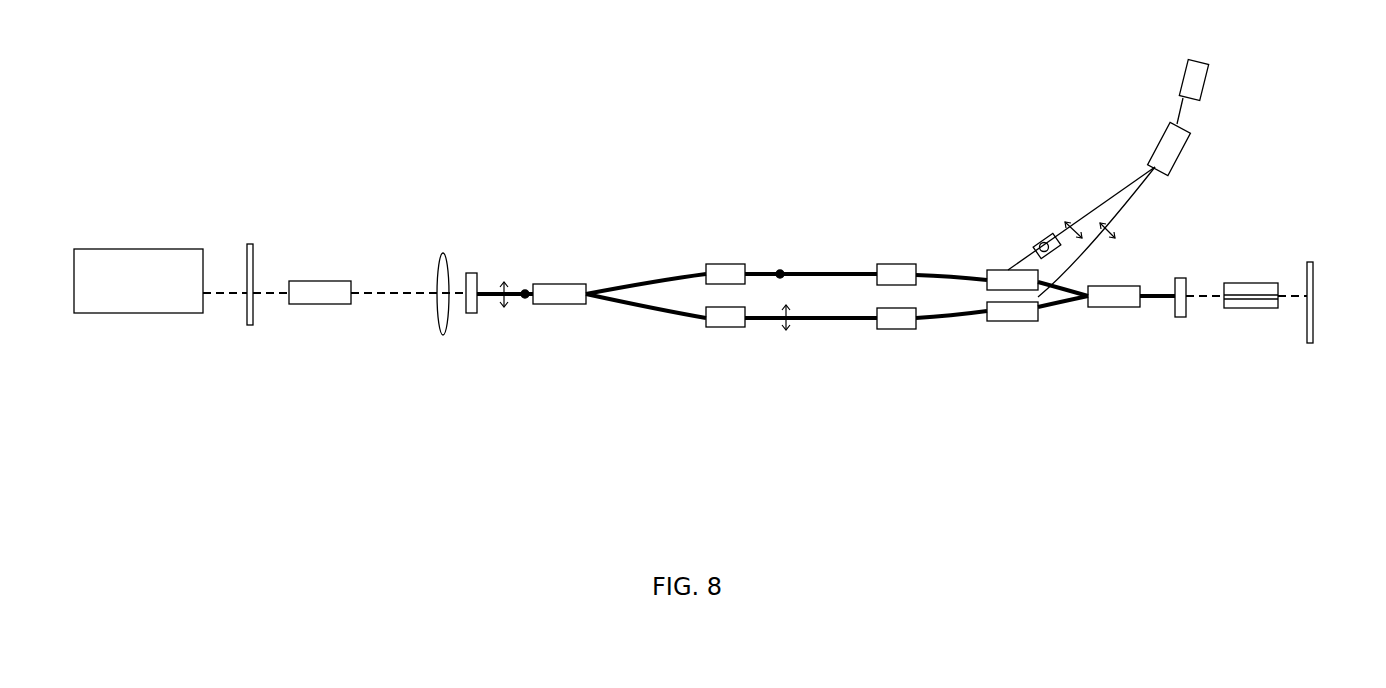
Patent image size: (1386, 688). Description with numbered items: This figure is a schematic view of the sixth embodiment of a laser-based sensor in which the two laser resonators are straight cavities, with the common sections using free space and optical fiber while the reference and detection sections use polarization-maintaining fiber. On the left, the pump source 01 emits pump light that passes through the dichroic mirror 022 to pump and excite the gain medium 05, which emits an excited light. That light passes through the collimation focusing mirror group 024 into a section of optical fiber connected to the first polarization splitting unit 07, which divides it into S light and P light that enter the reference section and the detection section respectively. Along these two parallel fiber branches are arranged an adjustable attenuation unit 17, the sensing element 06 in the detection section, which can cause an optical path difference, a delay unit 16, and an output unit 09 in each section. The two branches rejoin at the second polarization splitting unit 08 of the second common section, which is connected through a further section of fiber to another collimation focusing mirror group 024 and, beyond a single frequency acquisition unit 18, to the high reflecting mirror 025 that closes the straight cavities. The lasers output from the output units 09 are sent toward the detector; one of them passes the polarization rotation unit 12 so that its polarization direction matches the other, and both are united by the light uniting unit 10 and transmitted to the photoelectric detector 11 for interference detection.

The pump source 01 is at (138, 224).
The dichroic mirror 022 is at (283, 235).
The gain medium 05 is at (339, 225).
The collimation focusing mirror group 024 is at (475, 273).
The first polarization splitting unit 07 is at (573, 227).
The adjustable attenuation unit 17 is at (741, 276).
The sensing element 06 is at (911, 223).
The delay unit 16 is at (915, 348).
The output unit 09 is at (1027, 275).
The second polarization splitting unit 08 is at (1122, 337).
The polarization rotation unit 12 is at (1067, 194).
The light uniting unit 10 is at (1213, 142).
The photoelectric detector 11 is at (1236, 63).
The single frequency acquisition unit 18 is at (1238, 244).
The high reflecting mirror 025 is at (1339, 258).